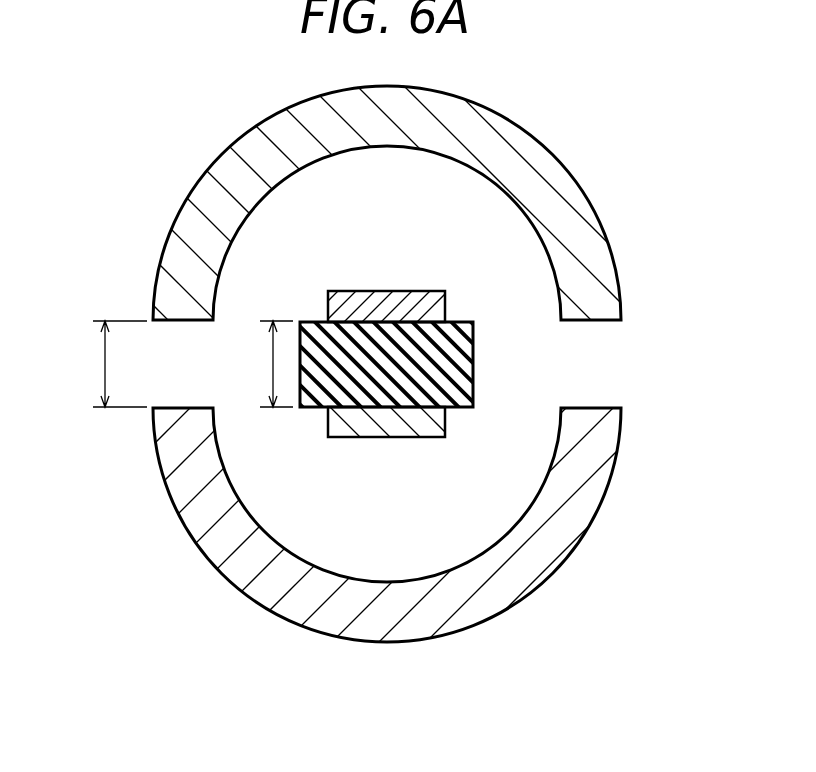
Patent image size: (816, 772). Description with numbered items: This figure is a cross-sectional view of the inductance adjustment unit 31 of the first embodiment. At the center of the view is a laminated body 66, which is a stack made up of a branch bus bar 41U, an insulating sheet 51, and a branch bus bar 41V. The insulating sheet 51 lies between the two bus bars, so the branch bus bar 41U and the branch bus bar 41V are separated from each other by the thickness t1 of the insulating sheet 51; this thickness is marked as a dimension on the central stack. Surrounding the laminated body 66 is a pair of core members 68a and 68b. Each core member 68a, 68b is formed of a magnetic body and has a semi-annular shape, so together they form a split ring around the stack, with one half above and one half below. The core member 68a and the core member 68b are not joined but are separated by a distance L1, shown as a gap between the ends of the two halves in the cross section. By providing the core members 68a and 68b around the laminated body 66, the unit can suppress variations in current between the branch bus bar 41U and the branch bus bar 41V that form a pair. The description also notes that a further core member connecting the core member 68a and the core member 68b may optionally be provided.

The inductance adjustment unit 31 is at (400, 386).
The core member 68a is at (582, 248).
The core member 68b is at (586, 456).
The laminated body 66 is at (523, 368).
The branch bus bar 41V is at (425, 305).
The insulating sheet 51 is at (452, 360).
The branch bus bar 41U is at (423, 425).
The distance L1 is at (107, 364).
The thickness t1 is at (268, 364).